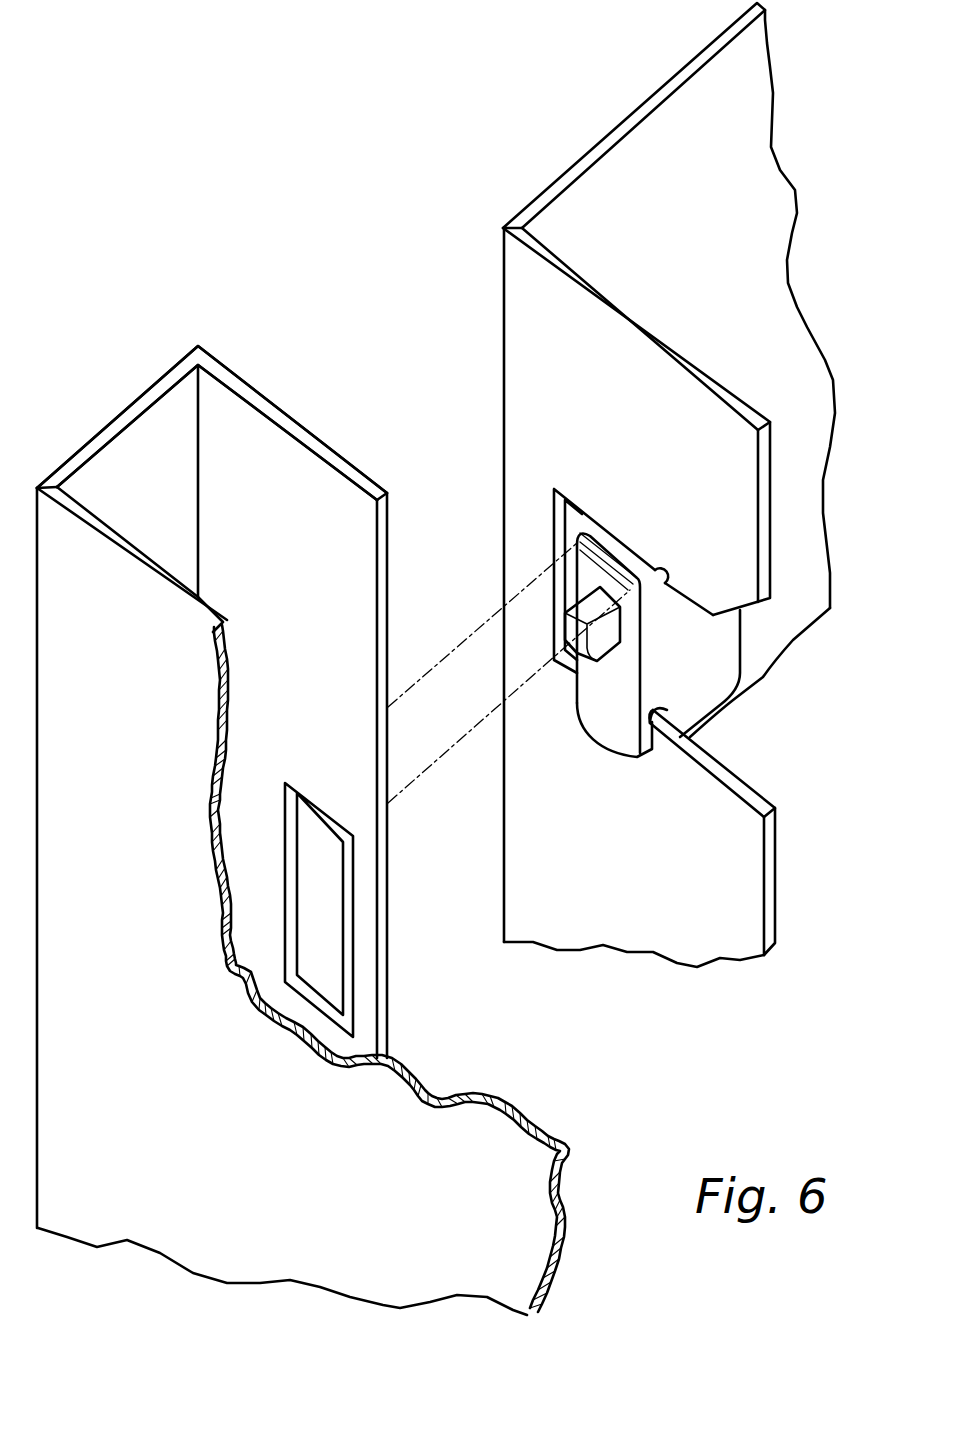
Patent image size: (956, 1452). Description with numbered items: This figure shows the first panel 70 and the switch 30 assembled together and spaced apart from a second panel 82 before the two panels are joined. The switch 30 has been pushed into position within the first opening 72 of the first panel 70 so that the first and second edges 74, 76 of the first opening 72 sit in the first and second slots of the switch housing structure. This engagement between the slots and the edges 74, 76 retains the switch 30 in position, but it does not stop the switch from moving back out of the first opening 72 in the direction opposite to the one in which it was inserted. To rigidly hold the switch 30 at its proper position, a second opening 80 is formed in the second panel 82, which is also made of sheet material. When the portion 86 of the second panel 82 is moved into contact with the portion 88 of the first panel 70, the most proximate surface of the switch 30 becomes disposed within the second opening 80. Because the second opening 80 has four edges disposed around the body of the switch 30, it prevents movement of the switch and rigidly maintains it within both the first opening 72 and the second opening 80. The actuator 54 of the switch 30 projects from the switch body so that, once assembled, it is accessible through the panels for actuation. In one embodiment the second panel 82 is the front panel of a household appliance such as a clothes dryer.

The switch 30 is at (651, 650).
The actuator 54 is at (590, 612).
The first panel 70 is at (643, 485).
The first opening 72 is at (580, 525).
The first edge 74 is at (700, 608).
The second edge 76 is at (747, 793).
The second opening 80 is at (322, 822).
The second panel 82 is at (138, 440).
The portion of the second panel 86 is at (250, 396).
The portion of the first panel 88 is at (600, 300).